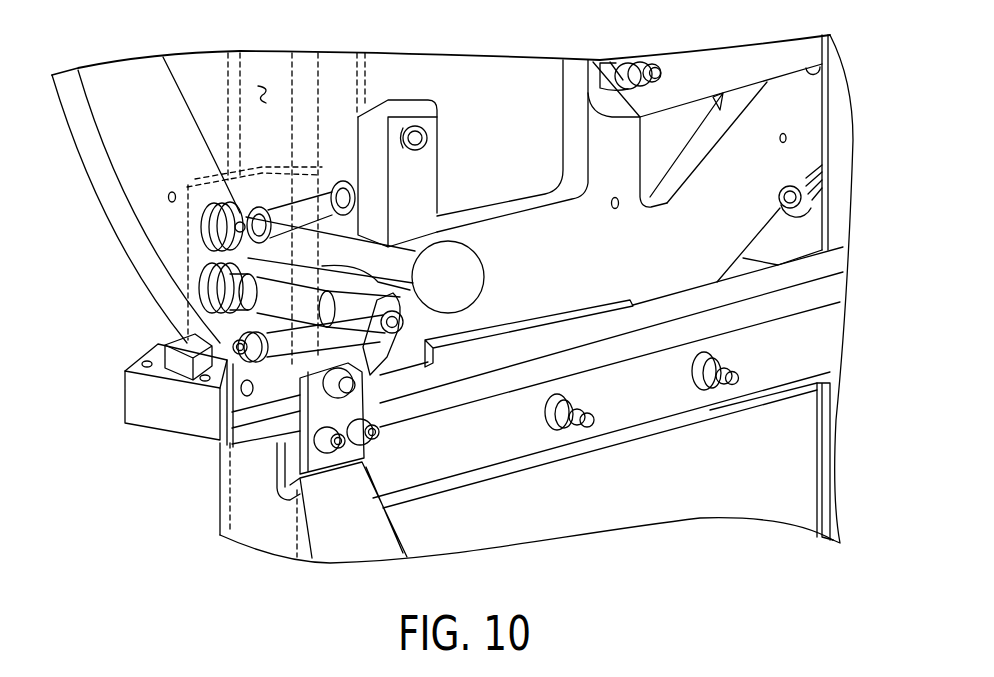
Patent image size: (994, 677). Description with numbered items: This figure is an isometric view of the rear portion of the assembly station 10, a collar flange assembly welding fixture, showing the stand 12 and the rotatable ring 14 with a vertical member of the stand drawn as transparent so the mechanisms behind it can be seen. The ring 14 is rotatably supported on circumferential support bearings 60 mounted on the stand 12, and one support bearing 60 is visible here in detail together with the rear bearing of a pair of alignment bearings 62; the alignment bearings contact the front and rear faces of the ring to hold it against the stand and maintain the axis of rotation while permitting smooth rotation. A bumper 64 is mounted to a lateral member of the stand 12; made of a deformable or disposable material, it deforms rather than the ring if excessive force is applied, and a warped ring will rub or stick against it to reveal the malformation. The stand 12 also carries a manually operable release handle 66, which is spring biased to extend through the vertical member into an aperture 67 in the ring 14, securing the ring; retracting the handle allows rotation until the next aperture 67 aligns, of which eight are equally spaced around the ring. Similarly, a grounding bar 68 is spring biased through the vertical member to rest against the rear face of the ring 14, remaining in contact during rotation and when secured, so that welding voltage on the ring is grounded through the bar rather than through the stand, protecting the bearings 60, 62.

The assembly station 10 is at (473, 70).
The stand 12 is at (703, 413).
The ring structure 14 is at (93, 190).
The support bearing 60 is at (182, 362).
The alignment bearing 62 is at (818, 207).
The bumper 64 is at (553, 325).
The release handle 66 is at (445, 253).
The aperture 67 is at (217, 217).
The grounding bar 68 is at (397, 372).